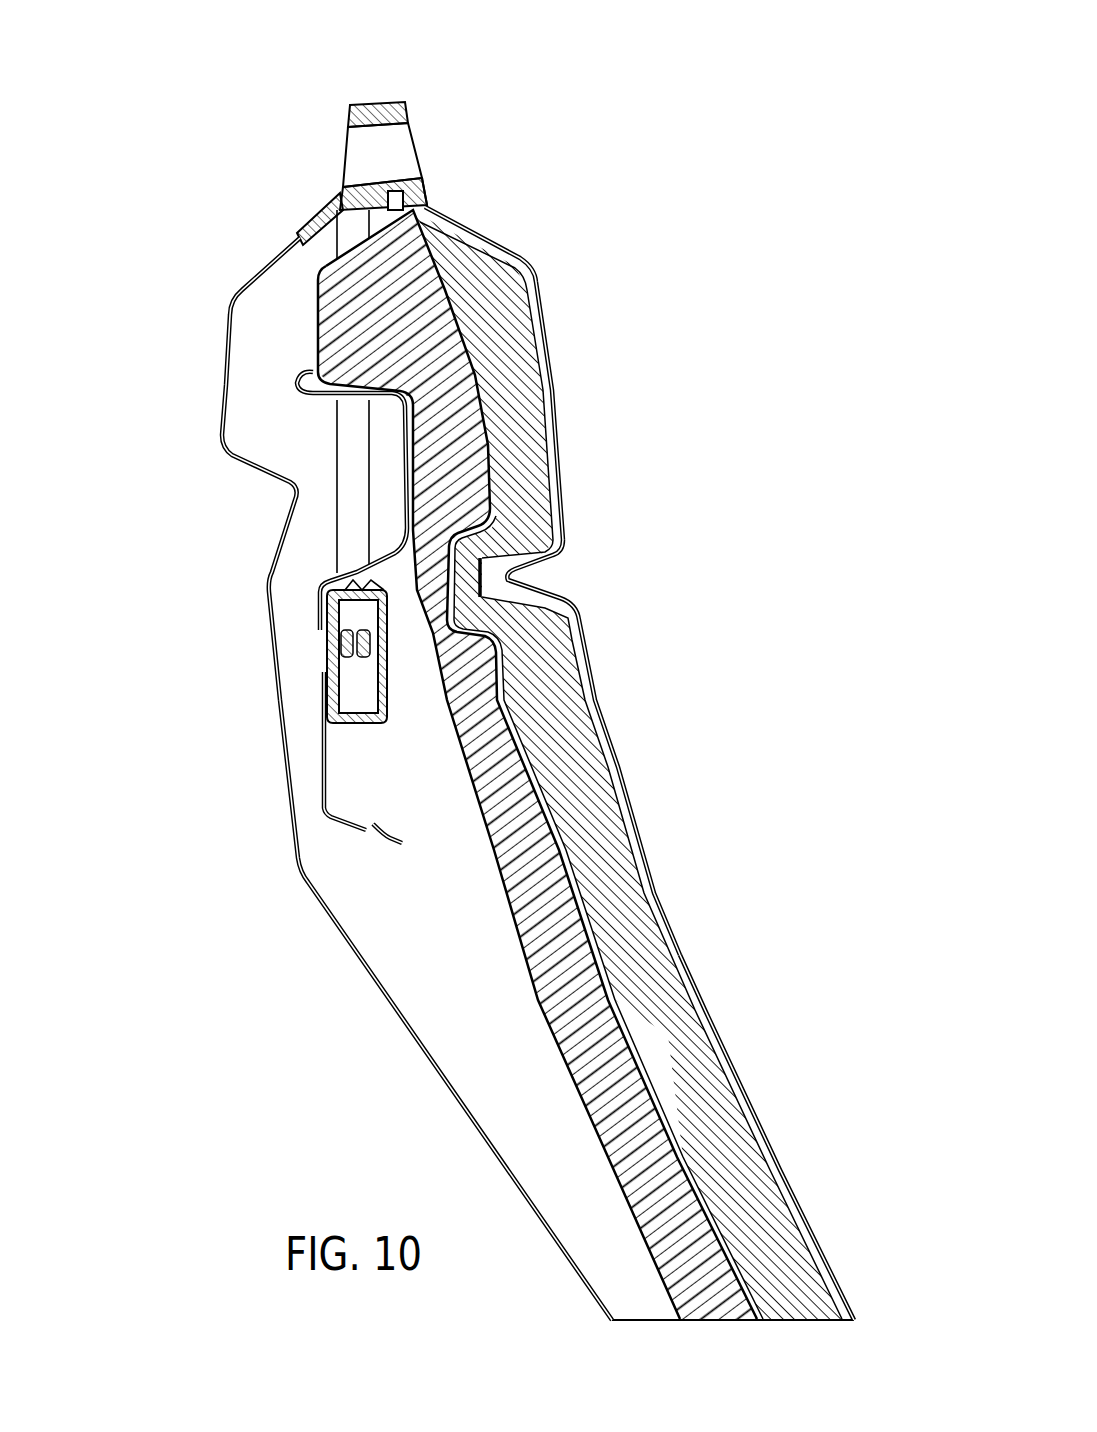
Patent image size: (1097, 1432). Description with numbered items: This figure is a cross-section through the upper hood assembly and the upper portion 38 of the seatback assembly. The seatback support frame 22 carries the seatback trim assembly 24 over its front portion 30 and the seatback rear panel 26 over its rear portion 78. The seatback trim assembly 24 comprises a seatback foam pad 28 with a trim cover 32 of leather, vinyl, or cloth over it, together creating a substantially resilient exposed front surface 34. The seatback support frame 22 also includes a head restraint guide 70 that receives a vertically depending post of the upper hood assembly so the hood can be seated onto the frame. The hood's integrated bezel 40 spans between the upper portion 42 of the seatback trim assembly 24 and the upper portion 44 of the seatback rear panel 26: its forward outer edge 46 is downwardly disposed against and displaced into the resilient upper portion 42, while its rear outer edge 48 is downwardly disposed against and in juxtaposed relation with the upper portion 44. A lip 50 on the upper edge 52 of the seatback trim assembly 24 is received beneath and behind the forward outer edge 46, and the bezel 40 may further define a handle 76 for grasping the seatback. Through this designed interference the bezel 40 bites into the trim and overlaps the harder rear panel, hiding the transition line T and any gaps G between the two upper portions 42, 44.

The seatback support frame 22 is at (335, 695).
The seatback trim assembly 24 is at (648, 935).
The seatback rear panel 26 is at (372, 980).
The seatback foam pad 28 is at (729, 1129).
The front portion 30 is at (420, 463).
The trim cover 32 is at (709, 1016).
The exposed front surface 34 is at (617, 767).
The upper portion 38 is at (300, 277).
The bezel 40 is at (360, 197).
The upper portion 42 is at (492, 243).
The upper portion 44 is at (280, 257).
The forward outer edge 46 is at (417, 200).
The rear outer edge 48 is at (297, 235).
The lip 50 is at (337, 200).
The upper edge 52 is at (380, 240).
The head restraint guide 70 is at (345, 438).
The handle 76 is at (347, 113).
The rear portion 78 is at (327, 811).
The gap G is at (387, 230).
The transition line T is at (282, 190).